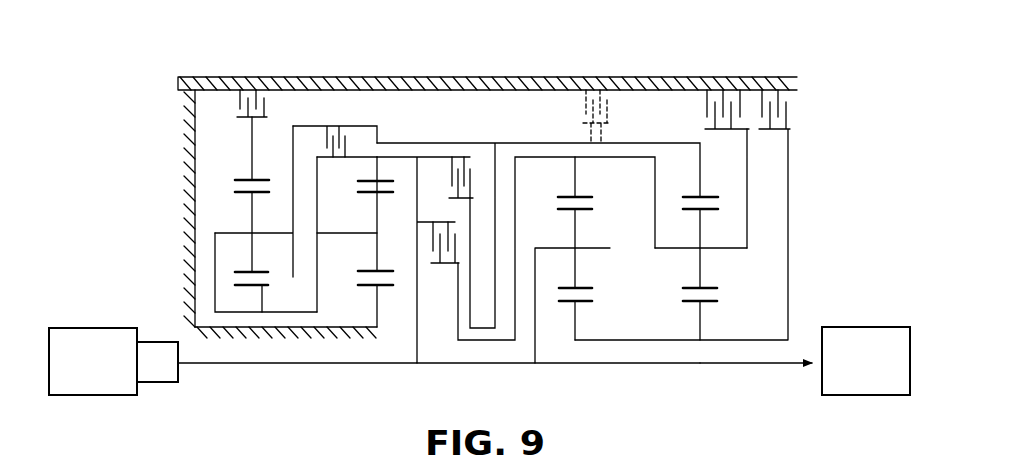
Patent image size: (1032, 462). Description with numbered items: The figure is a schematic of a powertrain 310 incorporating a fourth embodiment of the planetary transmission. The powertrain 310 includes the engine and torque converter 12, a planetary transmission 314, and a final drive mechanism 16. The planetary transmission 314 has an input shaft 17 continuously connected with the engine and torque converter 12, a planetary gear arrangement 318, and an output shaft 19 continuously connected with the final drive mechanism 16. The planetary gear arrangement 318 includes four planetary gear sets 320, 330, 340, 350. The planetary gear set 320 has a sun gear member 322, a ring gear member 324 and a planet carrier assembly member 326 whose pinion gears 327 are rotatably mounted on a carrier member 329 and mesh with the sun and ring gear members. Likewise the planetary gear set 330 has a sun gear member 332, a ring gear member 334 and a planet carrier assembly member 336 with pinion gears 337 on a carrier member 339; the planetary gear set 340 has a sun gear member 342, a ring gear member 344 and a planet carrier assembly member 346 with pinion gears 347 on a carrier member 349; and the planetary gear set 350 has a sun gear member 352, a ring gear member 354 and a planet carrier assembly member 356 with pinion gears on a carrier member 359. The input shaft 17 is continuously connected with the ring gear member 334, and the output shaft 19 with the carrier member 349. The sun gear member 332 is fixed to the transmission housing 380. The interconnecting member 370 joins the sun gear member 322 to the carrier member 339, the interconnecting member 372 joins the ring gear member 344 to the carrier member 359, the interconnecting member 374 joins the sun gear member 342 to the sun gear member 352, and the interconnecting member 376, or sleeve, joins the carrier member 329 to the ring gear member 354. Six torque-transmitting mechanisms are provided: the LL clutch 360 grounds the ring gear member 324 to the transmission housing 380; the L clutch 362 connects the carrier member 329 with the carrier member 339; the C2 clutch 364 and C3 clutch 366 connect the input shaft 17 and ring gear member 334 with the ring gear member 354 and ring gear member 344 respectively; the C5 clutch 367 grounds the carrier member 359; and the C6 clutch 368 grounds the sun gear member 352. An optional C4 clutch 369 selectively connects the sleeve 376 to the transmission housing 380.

The engine and torque converter 12 is at (97, 325).
The final drive mechanism 16 is at (848, 318).
The input shaft 17 is at (197, 367).
The output shaft 19 is at (767, 366).
The powertrain 310 is at (205, 63).
The planetary transmission 314 is at (357, 210).
The planetary gear arrangement 318 is at (603, 211).
The planetary gear set 320 is at (243, 292).
The sun gear member 322 is at (263, 290).
The ring gear member 324 is at (250, 178).
The planet carrier assembly member 326 is at (238, 248).
The pinion gears 327 is at (248, 215).
The carrier member 329 is at (237, 233).
The planetary gear set 330 is at (366, 293).
The sun gear member 332 is at (385, 287).
The ring gear member 334 is at (365, 175).
The planet carrier assembly member 336 is at (360, 250).
The pinion gears 337 is at (370, 213).
The carrier member 339 is at (386, 233).
The planetary gear set 340 is at (565, 306).
The sun gear member 342 is at (585, 303).
The ring gear member 344 is at (572, 195).
The planet carrier assembly member 346 is at (590, 268).
The pinion gears 347 is at (578, 231).
The carrier member 349 is at (607, 248).
The planetary gear set 350 is at (690, 306).
The sun gear member 352 is at (708, 303).
The ring gear member 354 is at (695, 195).
The planet carrier assembly member 356 is at (712, 268).
The carrier member 359 is at (728, 248).
The LL clutch 360 is at (268, 103).
The L clutch 362 is at (380, 138).
The C2 clutch 364 is at (477, 185).
The C3 clutch 366 is at (432, 258).
The C5 clutch 367 is at (698, 112).
The C6 clutch 368 is at (800, 108).
The optional C4 clutch 369 is at (575, 118).
The interconnecting member 370 is at (335, 233).
The interconnecting member 372 is at (622, 158).
The interconnecting member 374 is at (650, 365).
The interconnecting member 376 is at (633, 143).
The transmission housing 380 is at (220, 340).